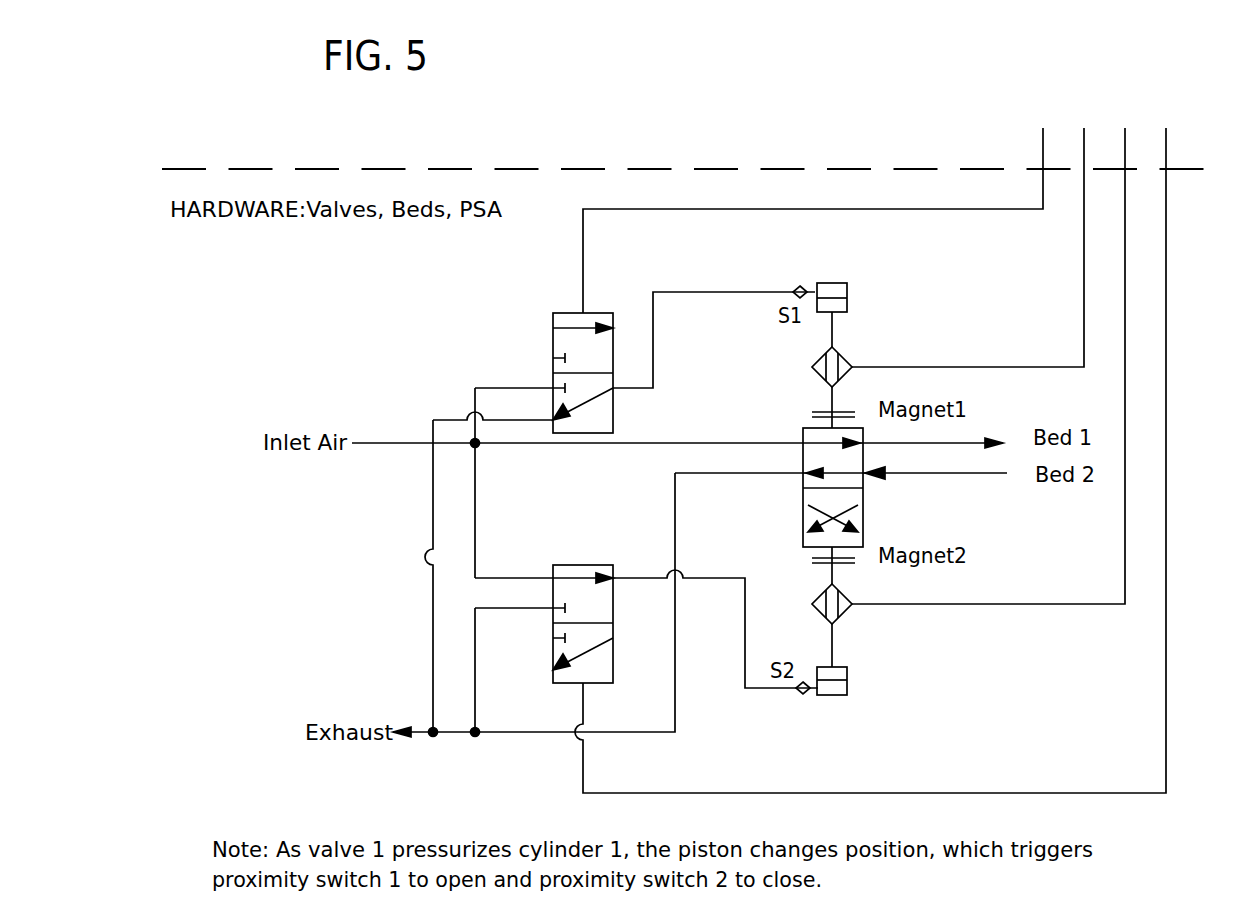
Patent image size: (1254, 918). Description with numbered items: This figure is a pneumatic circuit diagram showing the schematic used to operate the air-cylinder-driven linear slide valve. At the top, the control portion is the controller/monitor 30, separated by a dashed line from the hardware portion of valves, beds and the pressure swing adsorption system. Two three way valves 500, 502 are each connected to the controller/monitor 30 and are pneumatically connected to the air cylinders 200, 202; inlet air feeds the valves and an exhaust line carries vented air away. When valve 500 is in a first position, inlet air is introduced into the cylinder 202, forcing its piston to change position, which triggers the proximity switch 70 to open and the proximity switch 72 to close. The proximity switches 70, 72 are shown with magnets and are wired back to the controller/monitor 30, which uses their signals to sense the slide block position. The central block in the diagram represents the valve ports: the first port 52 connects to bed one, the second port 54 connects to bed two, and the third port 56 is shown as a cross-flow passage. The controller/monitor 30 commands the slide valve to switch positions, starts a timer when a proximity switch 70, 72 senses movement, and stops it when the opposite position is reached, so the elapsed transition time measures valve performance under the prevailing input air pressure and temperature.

The controller/monitor 30 is at (683, 151).
The three way valve 500 is at (553, 342).
The three way valve 502 is at (553, 650).
The second cylinder 202 is at (838, 290).
The first cylinder 200 is at (847, 690).
The proximity switch 70 is at (931, 349).
The proximity switch 72 is at (938, 625).
The first port 52 is at (867, 440).
The second port 54 is at (868, 467).
The third port 56 is at (865, 507).